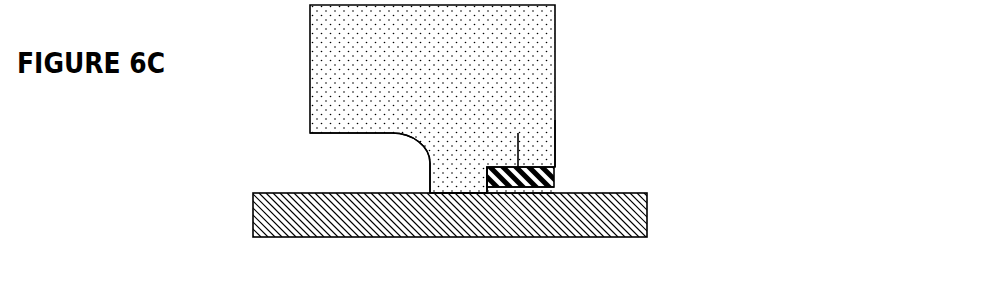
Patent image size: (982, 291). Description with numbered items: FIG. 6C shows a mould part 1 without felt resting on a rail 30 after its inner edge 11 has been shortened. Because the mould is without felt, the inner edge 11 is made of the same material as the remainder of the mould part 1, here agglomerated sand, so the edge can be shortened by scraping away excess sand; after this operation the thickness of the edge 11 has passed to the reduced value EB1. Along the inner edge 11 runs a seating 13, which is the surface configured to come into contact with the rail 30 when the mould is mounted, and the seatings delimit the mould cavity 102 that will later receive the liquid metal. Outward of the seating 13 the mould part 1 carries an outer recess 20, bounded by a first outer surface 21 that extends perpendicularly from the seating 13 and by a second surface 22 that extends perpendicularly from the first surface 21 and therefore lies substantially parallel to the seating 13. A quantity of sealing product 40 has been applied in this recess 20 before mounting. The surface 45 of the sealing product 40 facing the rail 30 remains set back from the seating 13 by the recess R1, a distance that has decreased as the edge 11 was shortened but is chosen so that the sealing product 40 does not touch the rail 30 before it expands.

The mould part 1 is at (541, 57).
The mould cavity 102 is at (374, 164).
The thickness of the edge after shortening EB1 is at (415, 162).
The second surface 22 is at (518, 133).
The outer recess 20 is at (556, 165).
The sealing product 40 is at (557, 174).
The recess after shortening R1 is at (556, 188).
The surface of the sealing product 45 is at (518, 188).
The rail 30 is at (613, 223).
The inner edge 11 is at (450, 183).
The seating 13 is at (470, 195).
The first outer surface 21 is at (487, 192).